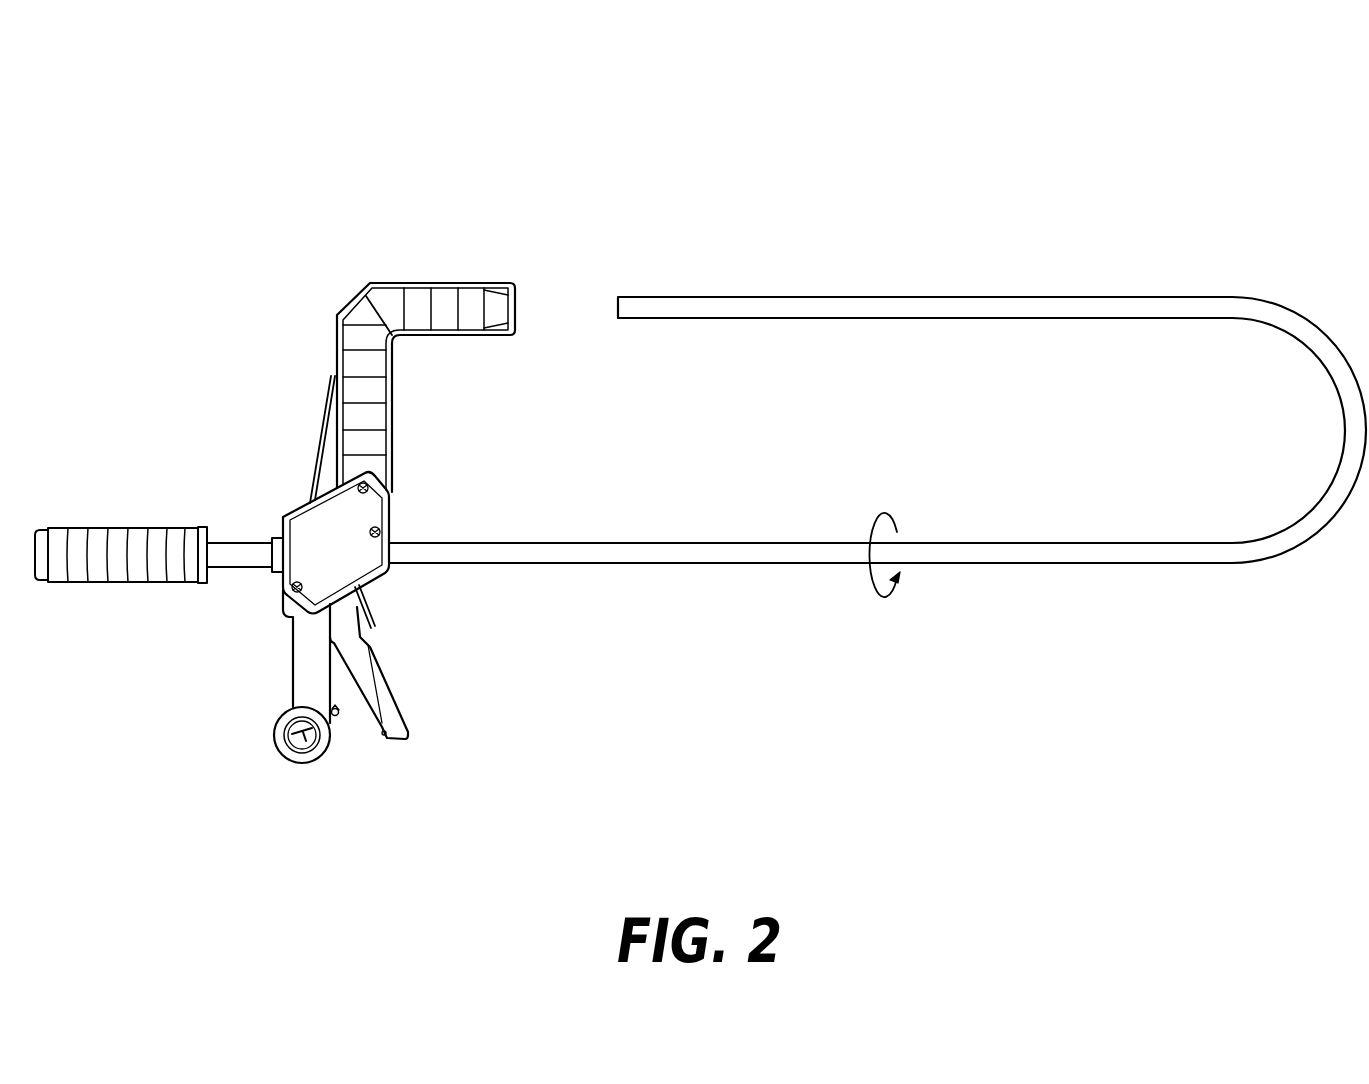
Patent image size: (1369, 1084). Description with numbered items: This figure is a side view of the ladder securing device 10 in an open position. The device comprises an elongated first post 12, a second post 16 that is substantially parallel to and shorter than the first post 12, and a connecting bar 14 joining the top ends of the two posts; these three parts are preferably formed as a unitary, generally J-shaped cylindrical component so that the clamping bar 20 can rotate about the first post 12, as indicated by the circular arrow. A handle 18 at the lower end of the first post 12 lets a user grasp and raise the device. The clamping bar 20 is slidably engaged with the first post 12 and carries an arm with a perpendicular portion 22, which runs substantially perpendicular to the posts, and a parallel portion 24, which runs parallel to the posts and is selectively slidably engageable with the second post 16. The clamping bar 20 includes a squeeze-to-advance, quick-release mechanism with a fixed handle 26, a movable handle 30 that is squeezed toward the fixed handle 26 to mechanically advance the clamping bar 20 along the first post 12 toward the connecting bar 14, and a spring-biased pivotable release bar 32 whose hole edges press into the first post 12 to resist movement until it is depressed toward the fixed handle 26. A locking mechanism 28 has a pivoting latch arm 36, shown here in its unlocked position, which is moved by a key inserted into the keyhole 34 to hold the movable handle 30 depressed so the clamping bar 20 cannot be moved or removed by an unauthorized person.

The ladder securing device 10 is at (393, 178).
The first post 12 is at (683, 565).
The connecting bar 14 is at (1356, 448).
The second post 16 is at (1090, 307).
The handle 18 is at (135, 537).
The clamping bar 20 is at (323, 444).
The perpendicular portion 22 is at (338, 339).
The parallel portion 24 is at (480, 286).
The fixed handle 26 is at (290, 658).
The locking mechanism 28 is at (272, 742).
The movable handle 30 is at (368, 695).
The release bar 32 is at (375, 612).
The keyhole 34 is at (308, 754).
The latch arm 36 is at (338, 714).